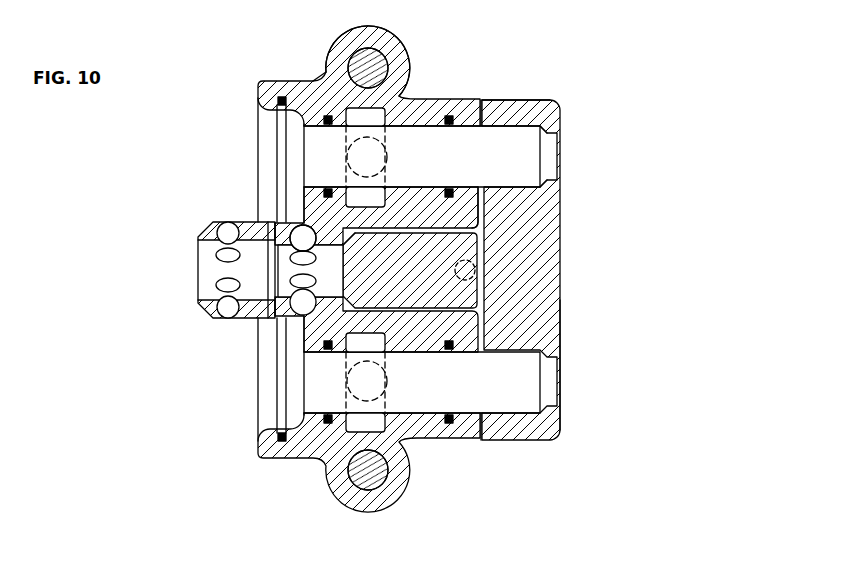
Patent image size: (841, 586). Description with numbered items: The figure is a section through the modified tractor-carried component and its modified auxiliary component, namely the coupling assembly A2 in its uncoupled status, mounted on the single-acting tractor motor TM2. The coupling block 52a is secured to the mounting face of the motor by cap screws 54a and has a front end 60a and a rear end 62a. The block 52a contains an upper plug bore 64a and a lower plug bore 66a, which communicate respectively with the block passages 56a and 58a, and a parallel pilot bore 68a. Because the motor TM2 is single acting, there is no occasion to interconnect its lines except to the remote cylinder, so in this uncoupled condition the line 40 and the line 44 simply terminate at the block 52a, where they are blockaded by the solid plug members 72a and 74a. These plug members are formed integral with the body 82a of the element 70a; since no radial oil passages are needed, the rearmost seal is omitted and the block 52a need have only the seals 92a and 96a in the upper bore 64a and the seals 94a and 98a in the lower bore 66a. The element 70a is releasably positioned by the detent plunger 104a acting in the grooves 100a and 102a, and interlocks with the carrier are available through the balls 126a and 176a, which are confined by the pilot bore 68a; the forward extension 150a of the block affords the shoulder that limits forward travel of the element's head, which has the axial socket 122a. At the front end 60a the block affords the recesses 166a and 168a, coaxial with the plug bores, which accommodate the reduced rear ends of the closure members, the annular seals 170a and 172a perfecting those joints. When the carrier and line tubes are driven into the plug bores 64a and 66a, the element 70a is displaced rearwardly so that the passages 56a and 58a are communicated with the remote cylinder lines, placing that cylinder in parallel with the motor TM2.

The coupling block 52a is at (342, 54).
The cap screws 54a is at (386, 66).
The tractor motor TM2 is at (420, 75).
The seal 92a is at (449, 115).
The rear end of block 62a is at (481, 99).
The coupling assembly A2 is at (527, 96).
The front end of block 60a is at (258, 98).
The annular seal 170a is at (277, 106).
The upper recess 166a is at (257, 155).
The detent balls 176a is at (228, 231).
The detent balls 126a is at (297, 247).
The forward coaxial extension 150a is at (208, 311).
The lower recess 168a is at (264, 393).
The annular seal 172a is at (276, 438).
The seal 98a is at (329, 424).
The seal 94a is at (447, 425).
The lower plug bore 66a is at (329, 351).
The line 44 is at (383, 377).
The block passage 58a is at (379, 421).
The lower plug member 74a is at (480, 393).
The upper plug member 72a is at (508, 170).
The line 40 is at (388, 169).
The block passage 56a is at (385, 122).
The upper plug bore 64a is at (462, 128).
The seal 96a is at (329, 126).
The detent groove 100a is at (352, 236).
The socket 122a is at (336, 269).
The pilot bore 68a is at (397, 314).
The detent groove 102a is at (468, 238).
The element 70a is at (574, 255).
The detent plunger 104a is at (476, 270).
The body 82a is at (553, 306).